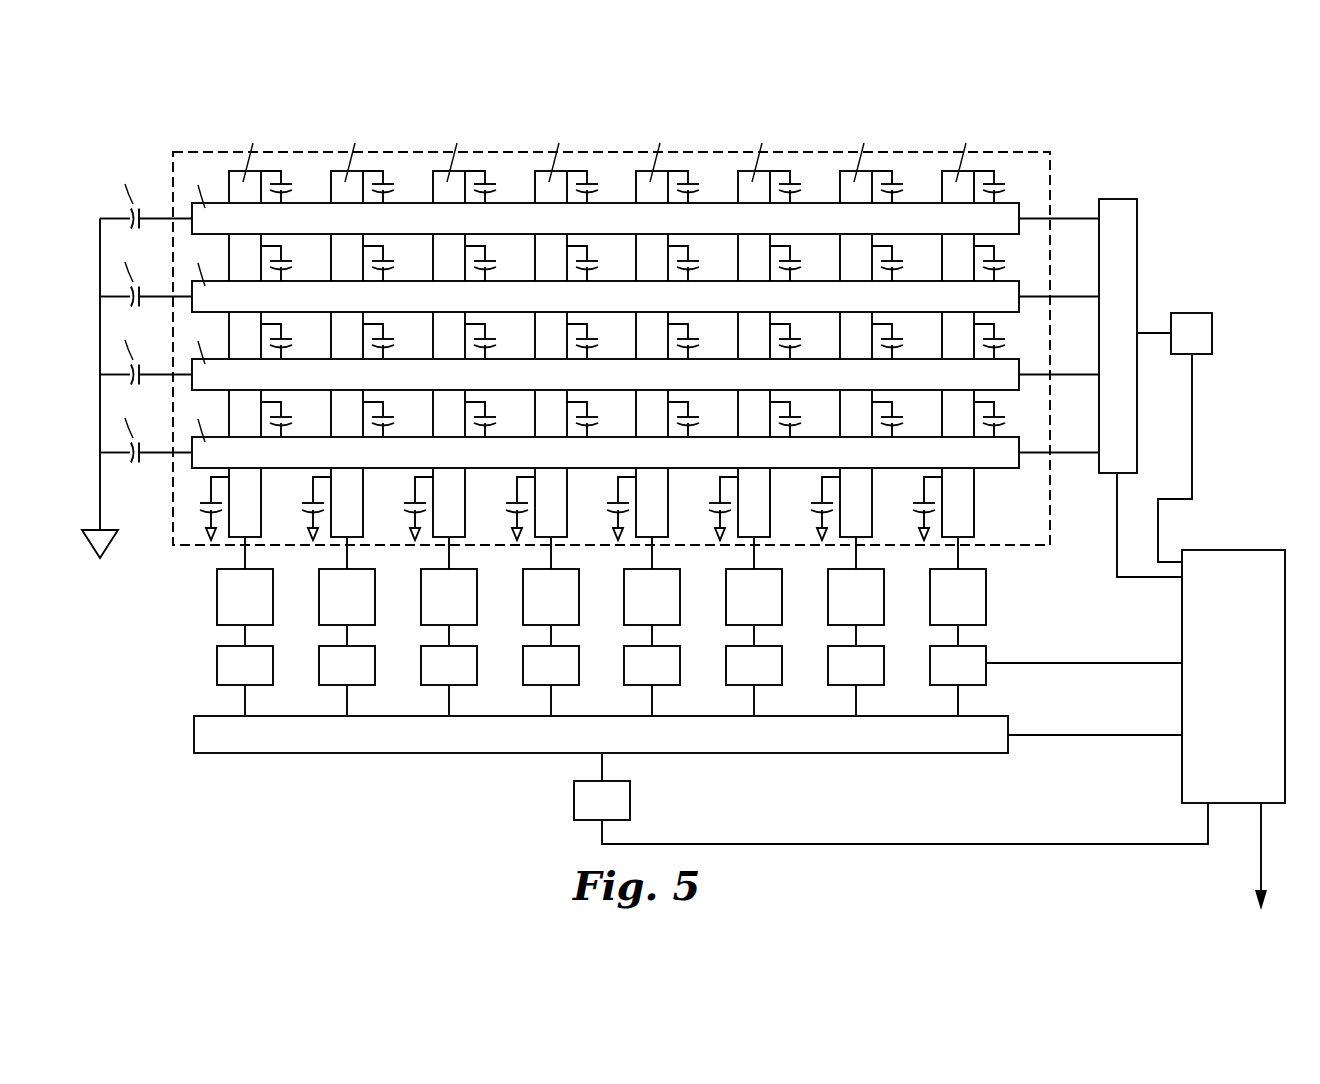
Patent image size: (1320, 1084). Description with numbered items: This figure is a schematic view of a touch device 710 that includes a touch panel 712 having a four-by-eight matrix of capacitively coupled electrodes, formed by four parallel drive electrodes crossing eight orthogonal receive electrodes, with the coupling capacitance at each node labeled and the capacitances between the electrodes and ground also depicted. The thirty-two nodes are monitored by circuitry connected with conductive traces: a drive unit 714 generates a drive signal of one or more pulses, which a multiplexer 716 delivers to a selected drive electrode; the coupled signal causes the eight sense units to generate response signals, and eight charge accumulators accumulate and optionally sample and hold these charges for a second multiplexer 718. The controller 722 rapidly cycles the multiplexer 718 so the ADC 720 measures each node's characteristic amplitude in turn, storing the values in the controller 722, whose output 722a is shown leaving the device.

The touch device 710 is at (1118, 127).
The touch panel 712 is at (1031, 150).
The drive unit 714 is at (1191, 314).
The multiplexer 716 is at (1119, 212).
The multiplexer 718 is at (194, 734).
The ADC 720 is at (580, 800).
The controller 722 is at (1255, 598).
The controller output 722a is at (1259, 877).